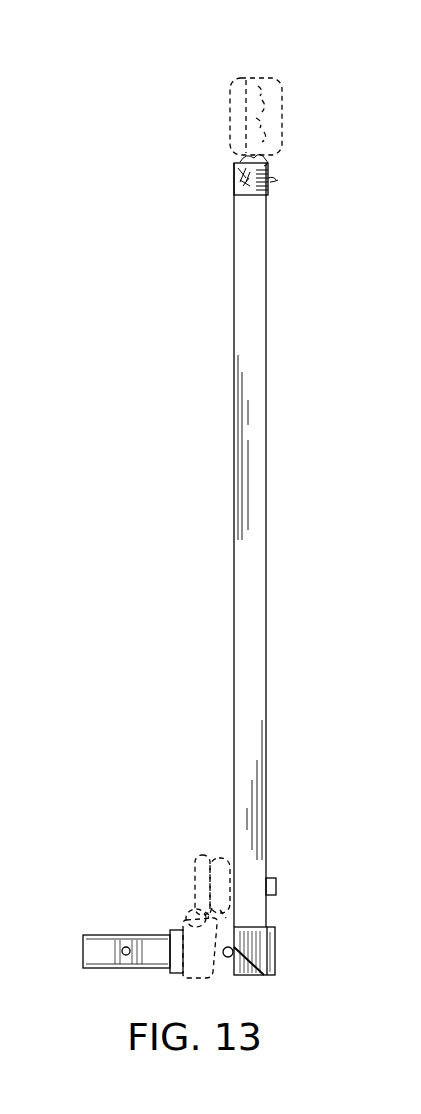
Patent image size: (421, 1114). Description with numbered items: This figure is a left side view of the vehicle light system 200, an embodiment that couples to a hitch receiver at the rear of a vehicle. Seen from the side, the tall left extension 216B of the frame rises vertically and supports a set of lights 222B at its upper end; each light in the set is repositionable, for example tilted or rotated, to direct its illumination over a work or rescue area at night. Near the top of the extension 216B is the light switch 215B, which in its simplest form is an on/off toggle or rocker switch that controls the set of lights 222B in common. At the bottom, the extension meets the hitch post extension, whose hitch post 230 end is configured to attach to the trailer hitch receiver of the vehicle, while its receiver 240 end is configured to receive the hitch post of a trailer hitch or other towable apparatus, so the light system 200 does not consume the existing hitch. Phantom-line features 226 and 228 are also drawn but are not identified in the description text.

The vehicle light system 200 is at (158, 78).
The set of lights 222B is at (235, 125).
The light switch 215B is at (288, 190).
The left extension 216B is at (234, 578).
The fingers (user's hand, phantom) 226 is at (207, 862).
The hand portion (phantom) 228 is at (195, 958).
The hitch post 230 is at (110, 942).
The receiver 240 is at (287, 935).